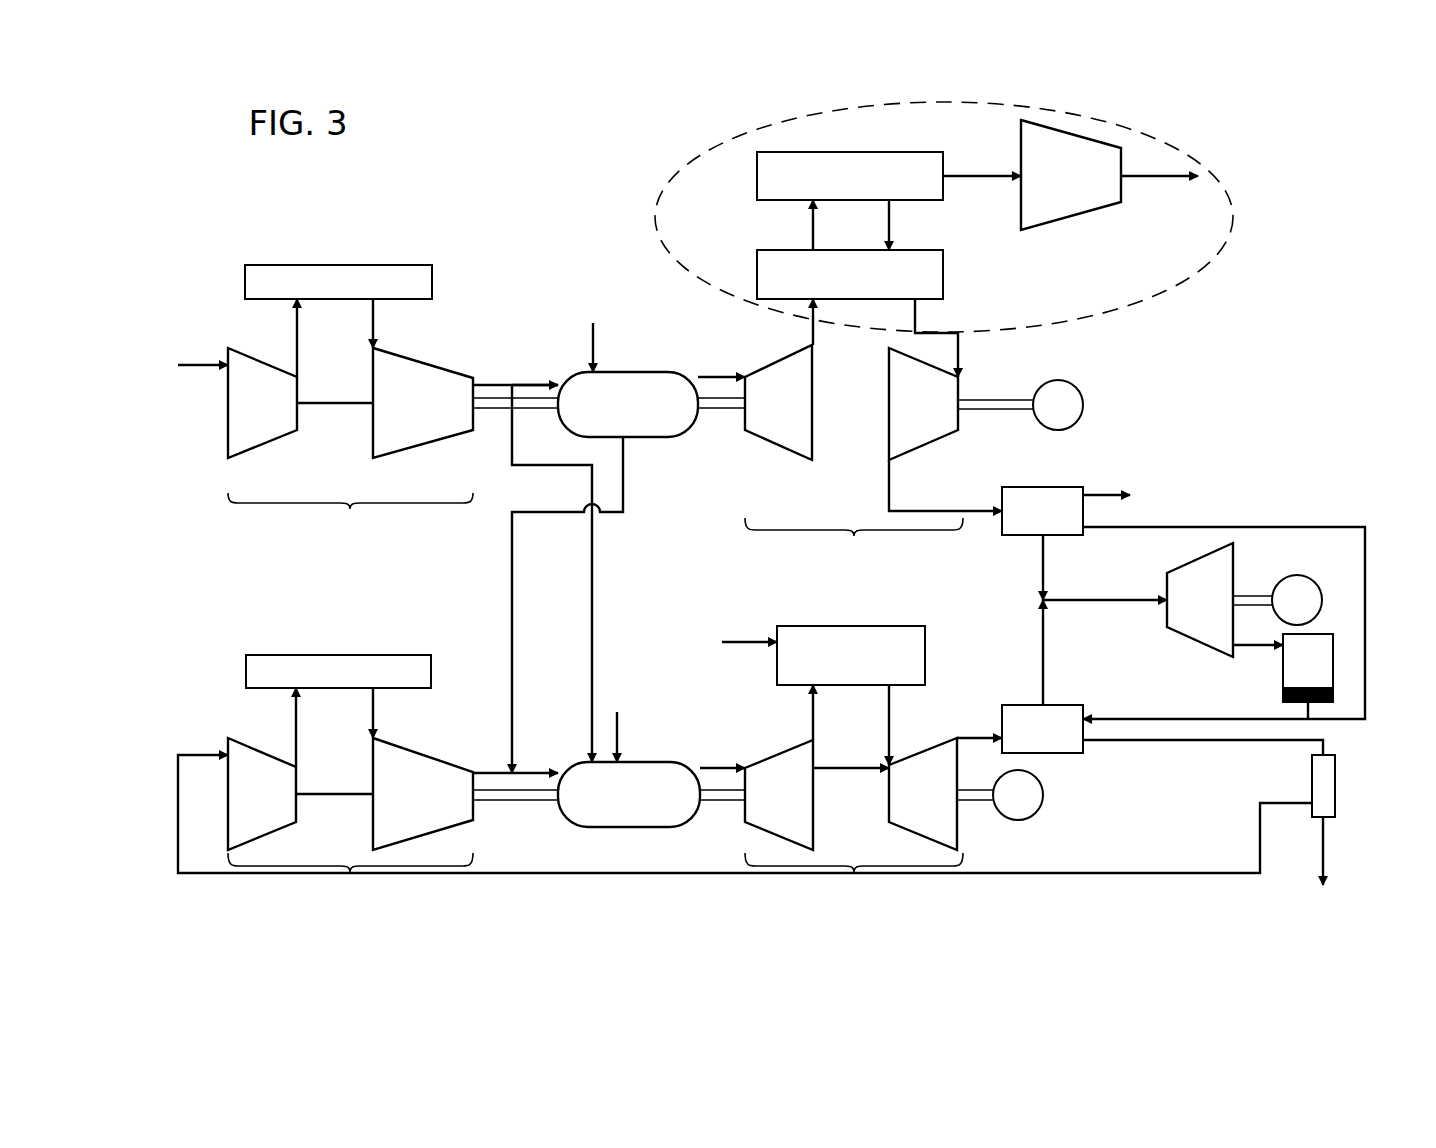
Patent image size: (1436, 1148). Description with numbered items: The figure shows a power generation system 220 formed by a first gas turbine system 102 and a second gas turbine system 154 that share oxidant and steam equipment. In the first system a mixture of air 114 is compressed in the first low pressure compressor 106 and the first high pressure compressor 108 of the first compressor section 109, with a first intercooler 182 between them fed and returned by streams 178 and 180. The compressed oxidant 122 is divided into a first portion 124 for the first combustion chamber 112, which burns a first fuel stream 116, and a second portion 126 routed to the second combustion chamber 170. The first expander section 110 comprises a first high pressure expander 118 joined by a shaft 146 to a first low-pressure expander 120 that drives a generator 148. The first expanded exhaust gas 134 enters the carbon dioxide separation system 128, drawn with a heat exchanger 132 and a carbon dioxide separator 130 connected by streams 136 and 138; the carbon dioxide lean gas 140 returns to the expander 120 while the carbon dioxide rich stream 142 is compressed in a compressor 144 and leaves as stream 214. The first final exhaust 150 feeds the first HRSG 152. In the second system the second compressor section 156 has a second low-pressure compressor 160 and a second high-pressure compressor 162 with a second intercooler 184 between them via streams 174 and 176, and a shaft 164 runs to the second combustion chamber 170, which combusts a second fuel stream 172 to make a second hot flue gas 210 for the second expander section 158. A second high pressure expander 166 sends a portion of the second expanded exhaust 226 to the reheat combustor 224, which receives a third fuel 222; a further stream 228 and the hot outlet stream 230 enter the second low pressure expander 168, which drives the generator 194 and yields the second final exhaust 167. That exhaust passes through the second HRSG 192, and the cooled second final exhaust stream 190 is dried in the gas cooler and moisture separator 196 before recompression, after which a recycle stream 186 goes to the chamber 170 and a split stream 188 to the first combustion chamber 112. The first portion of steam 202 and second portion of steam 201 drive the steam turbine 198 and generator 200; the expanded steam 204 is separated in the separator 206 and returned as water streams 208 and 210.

The first gas turbine system 102 is at (720, 315).
The first low pressure compressor 106 is at (275, 445).
The first high pressure compressor 108 is at (440, 445).
The first compressor section 109 is at (350, 514).
The first expander section 110 is at (854, 543).
The first combustion chamber 112 is at (660, 437).
The mixture of air 114 is at (195, 368).
The first fuel stream 116 is at (593, 333).
The first high pressure expander 118 is at (790, 452).
The first low-pressure expander 120 is at (938, 443).
The compressed oxidant 122 is at (497, 383).
The first portion of compressed oxidant 124 is at (528, 383).
The second portion of compressed oxidant 126 is at (530, 465).
The CO2 separation system 128 is at (708, 148).
The CO2 separator 130 is at (910, 152).
The heat exchanger HX 132 is at (943, 271).
The first expanded exhaust gas 134 is at (813, 337).
The cooled exhaust stream to separator 136 is at (813, 237).
The CO2 lean stream 138 is at (889, 215).
The CO2 lean gas 140 is at (943, 316).
The CO2 rich stream 142 is at (985, 178).
The compressor 144 is at (1021, 150).
The first shaft 146 is at (500, 408).
The first generator 148 is at (1082, 390).
The first final exhaust 150 is at (962, 506).
The first heat recovery steam generator 152 is at (1055, 487).
The second gas turbine system 154 is at (620, 753).
The second compressor section 156 is at (350, 878).
The second expander section 158 is at (854, 878).
The second low-pressure compressor 160 is at (272, 831).
The second high-pressure compressor 162 is at (432, 831).
The second shaft 164 is at (518, 800).
The second high pressure expander 166 is at (775, 843).
The second final exhaust 167 is at (966, 737).
The second low pressure expander 168 is at (927, 843).
The second combustion chamber 170 is at (628, 827).
The second fuel stream 172 is at (617, 730).
The LPC2 discharge to intercooler 2 174 is at (296, 731).
The intercooler 2 discharge to HPC2 176 is at (373, 712).
The LPC1 discharge to intercooler 1 178 is at (297, 336).
The intercooler 1 discharge to HPC1 180 is at (373, 318).
The first intercooler 182 is at (340, 265).
The second intercooler 184 is at (340, 655).
The recycle stream 186 is at (494, 773).
The split stream 188 is at (512, 597).
The cooled second final exhaust stream 190 is at (1158, 741).
The second heat recovery steam generator 192 is at (1064, 705).
The generator 194 is at (1044, 802).
The gas cooler and moisture separator 196 is at (1335, 787).
The steam turbine 198 is at (1196, 648).
The generator 200 is at (1310, 578).
The second portion of steam 201 is at (1040, 660).
The first portion of steam 202 is at (1040, 572).
The expanded steam 204 is at (1258, 645).
The separator 206 is at (1330, 638).
The water stream 208 is at (1365, 655).
The second hot flue gas 210 is at (1118, 719).
The expanded CO2 stream 214 is at (1162, 178).
The power generation system 220 is at (268, 182).
The third fuel 222 is at (736, 642).
The reheat combustor 224 is at (870, 626).
The portion of the second expanded exhaust 226 is at (813, 717).
The HPT2 exhaust stream 228 is at (845, 767).
The outlet stream 230 is at (889, 714).